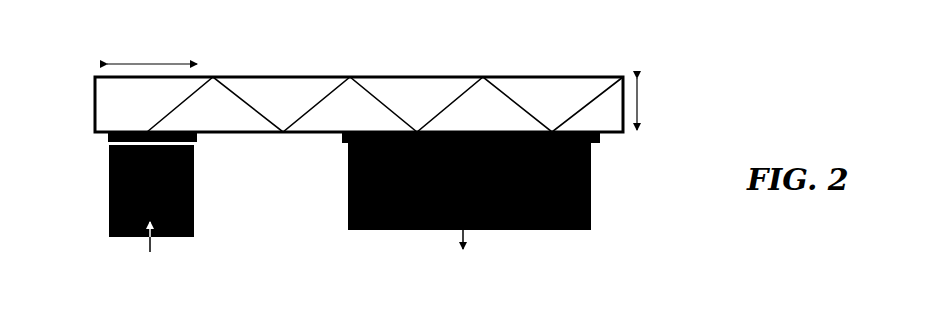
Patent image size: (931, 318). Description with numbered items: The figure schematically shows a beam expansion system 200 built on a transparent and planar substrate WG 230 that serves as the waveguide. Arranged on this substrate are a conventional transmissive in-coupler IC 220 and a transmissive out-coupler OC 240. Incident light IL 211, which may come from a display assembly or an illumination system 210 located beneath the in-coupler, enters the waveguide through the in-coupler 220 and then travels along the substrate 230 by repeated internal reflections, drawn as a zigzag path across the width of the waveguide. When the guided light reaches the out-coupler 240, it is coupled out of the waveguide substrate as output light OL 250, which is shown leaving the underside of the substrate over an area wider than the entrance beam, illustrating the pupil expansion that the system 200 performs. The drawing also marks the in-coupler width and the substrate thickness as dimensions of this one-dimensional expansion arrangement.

The beam expansion system 200 is at (677, 32).
The display assembly or illumination system 210 is at (160, 265).
The incident light 211 is at (108, 206).
The transmissive in-coupler 220 is at (101, 138).
The transparent planar substrate (waveguide) 230 is at (104, 93).
The transmissive out-coupler 240 is at (597, 133).
The output light (OL) 250 is at (591, 210).